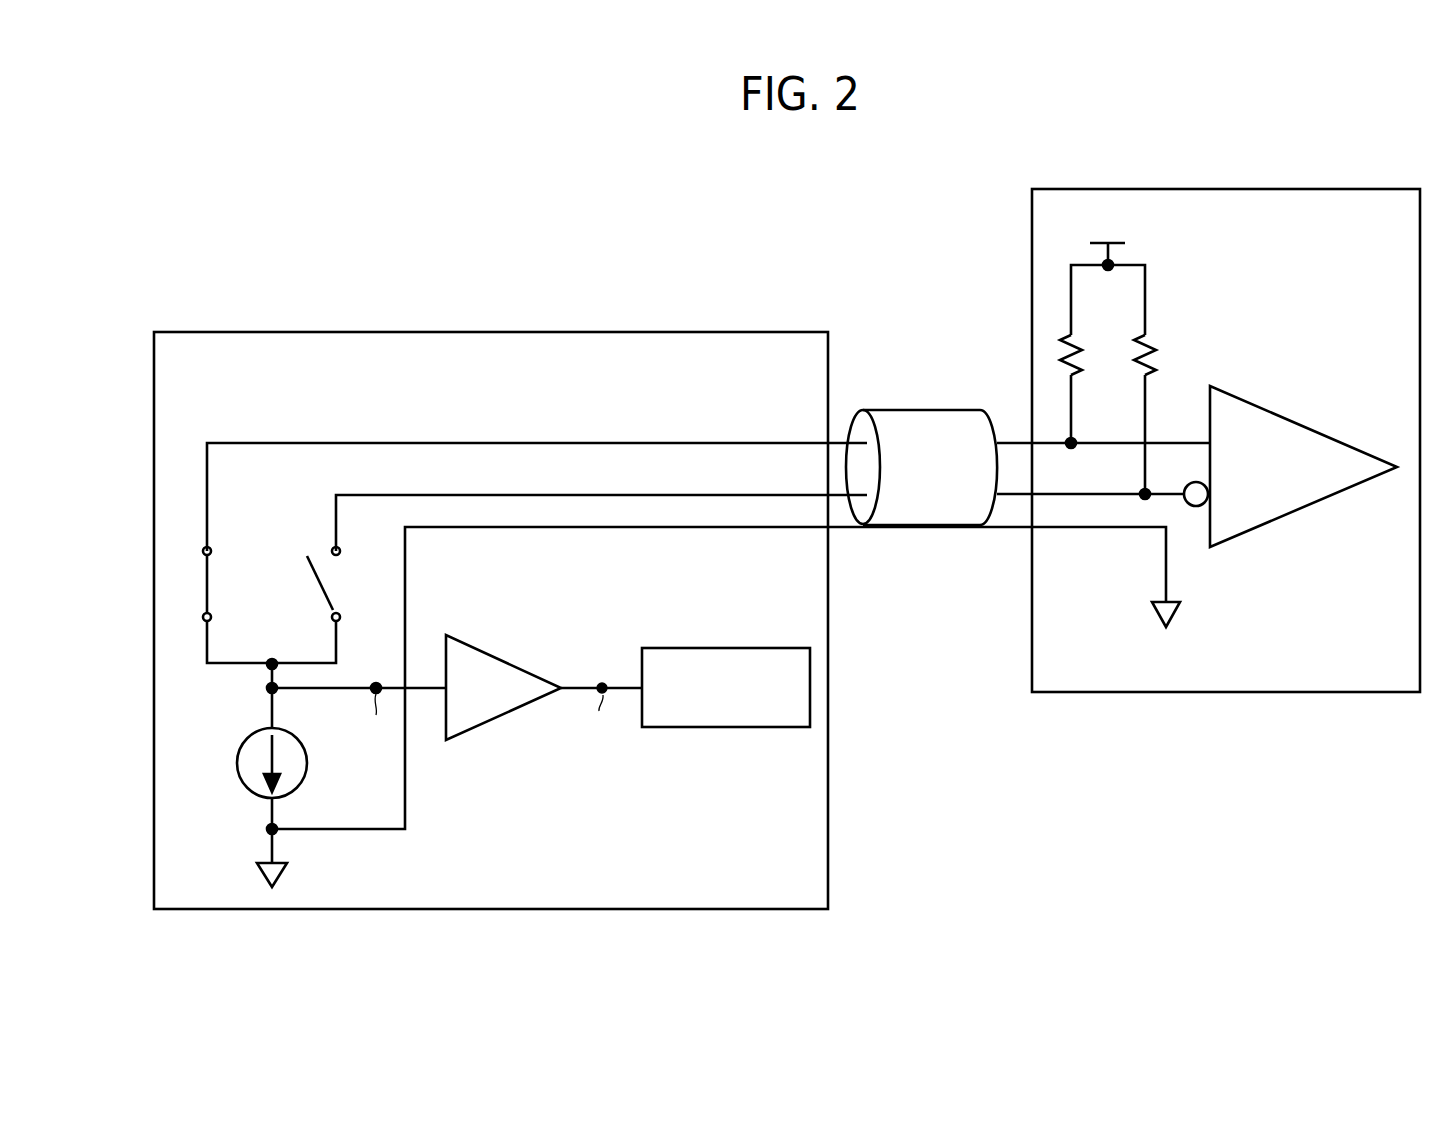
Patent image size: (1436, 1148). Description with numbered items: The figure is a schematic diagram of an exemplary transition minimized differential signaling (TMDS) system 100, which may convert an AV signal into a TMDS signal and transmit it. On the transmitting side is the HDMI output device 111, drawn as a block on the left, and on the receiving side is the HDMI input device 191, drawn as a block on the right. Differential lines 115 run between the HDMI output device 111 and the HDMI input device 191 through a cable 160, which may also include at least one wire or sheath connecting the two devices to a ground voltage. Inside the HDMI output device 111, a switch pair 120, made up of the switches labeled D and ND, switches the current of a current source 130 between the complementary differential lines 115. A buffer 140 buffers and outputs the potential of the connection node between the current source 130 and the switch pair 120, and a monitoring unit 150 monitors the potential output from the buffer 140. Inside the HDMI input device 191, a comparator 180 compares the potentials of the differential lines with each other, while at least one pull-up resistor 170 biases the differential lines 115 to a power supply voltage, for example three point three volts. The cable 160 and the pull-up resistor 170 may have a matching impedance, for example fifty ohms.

The TMDS system 100 is at (1327, 120).
The HDMI output device 111 is at (699, 331).
The differential lines 115 is at (673, 494).
The switch pair 120 is at (213, 582).
The current source 130 is at (302, 747).
The buffer 140 is at (496, 657).
The monitoring unit 150 is at (754, 648).
The cable 160 is at (935, 409).
The pull-up resistor 170 is at (1085, 343).
The comparator 180 is at (1292, 417).
The HDMI input device 191 is at (1359, 188).